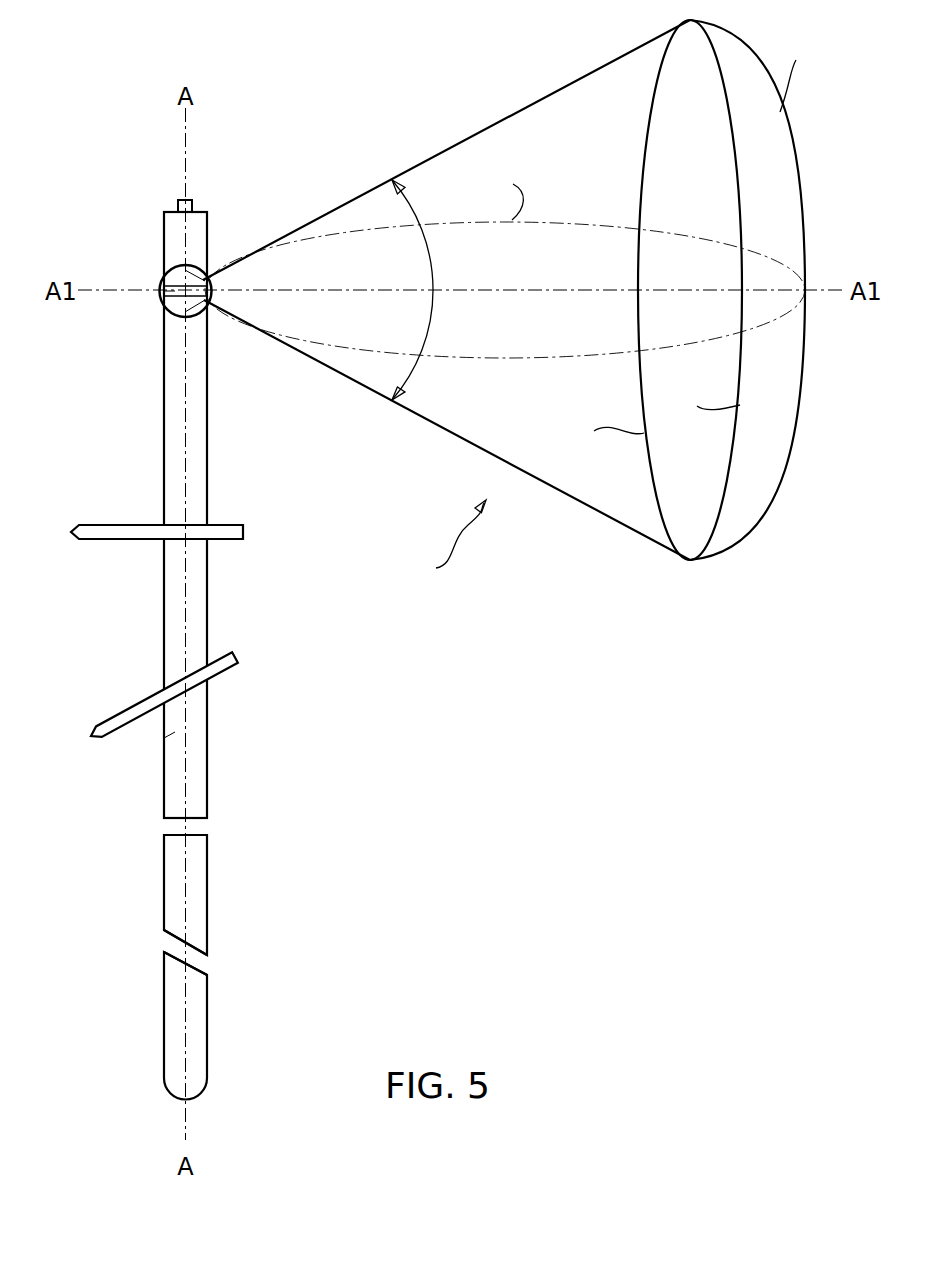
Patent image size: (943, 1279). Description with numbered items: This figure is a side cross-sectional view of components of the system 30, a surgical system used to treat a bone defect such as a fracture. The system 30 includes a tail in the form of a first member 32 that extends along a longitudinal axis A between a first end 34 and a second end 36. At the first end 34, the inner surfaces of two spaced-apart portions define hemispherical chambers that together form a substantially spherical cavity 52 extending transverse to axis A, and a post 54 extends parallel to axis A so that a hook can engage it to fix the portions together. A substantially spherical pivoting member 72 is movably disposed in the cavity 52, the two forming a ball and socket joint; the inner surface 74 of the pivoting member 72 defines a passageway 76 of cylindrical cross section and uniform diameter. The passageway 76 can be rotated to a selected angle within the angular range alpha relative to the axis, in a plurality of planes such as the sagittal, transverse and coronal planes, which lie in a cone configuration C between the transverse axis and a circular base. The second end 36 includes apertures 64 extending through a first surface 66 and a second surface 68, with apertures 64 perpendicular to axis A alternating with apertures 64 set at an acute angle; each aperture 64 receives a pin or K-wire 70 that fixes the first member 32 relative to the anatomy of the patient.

The system 30 is at (614, 667).
The first member 32 is at (179, 594).
The first end 34 is at (163, 222).
The second end 36 is at (198, 1085).
The spherical cavity 52 is at (164, 284).
The post 54 is at (194, 207).
The aperture 64 is at (207, 540).
The first surface 66 is at (207, 897).
The second surface 68 is at (207, 765).
The pin or K-wire 70 is at (101, 517).
The pivoting member 72 is at (191, 277).
The inner surface 74 is at (205, 299).
The passageway 76 is at (163, 295).